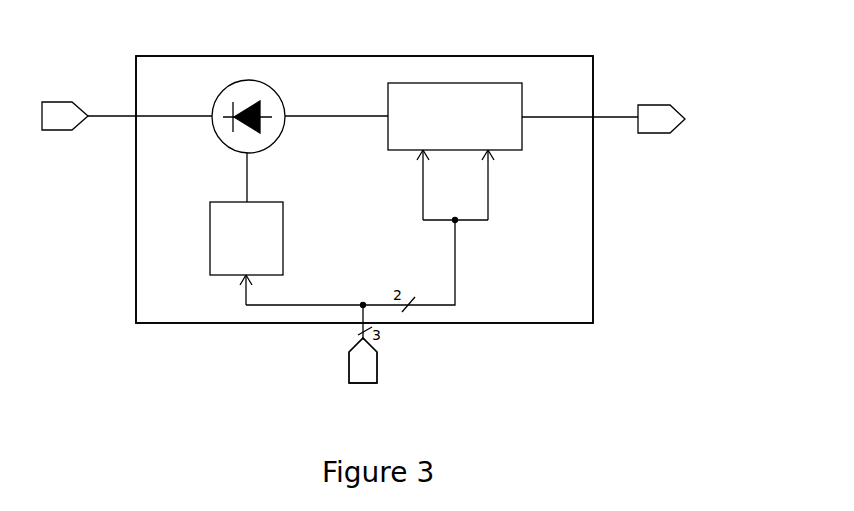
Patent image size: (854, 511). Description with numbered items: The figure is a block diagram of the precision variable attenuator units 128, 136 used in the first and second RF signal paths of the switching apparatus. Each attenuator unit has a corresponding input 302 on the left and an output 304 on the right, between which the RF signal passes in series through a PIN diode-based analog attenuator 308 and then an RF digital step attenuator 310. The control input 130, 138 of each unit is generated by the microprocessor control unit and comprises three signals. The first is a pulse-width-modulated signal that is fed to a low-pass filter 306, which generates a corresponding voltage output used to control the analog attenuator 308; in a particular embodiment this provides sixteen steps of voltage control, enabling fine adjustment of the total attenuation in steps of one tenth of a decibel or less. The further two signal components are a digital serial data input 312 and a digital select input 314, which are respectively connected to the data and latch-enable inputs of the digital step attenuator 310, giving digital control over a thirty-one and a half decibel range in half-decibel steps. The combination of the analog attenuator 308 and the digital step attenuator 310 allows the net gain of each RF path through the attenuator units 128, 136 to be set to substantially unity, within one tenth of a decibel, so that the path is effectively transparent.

The precision variable attenuator unit 128 is at (611, 77).
The precision variable attenuator unit 136 is at (364, 189).
The input 302 is at (60, 131).
The output 304 is at (660, 135).
The low-pass filter 306 is at (286, 240).
The PIN diode-based analog attenuator 308 is at (285, 100).
The RF digital step attenuator 310 is at (524, 142).
The digital serial data input 312 is at (423, 185).
The digital select input 314 is at (492, 213).
The control input 130 is at (380, 365).
The control input 138 is at (363, 360).